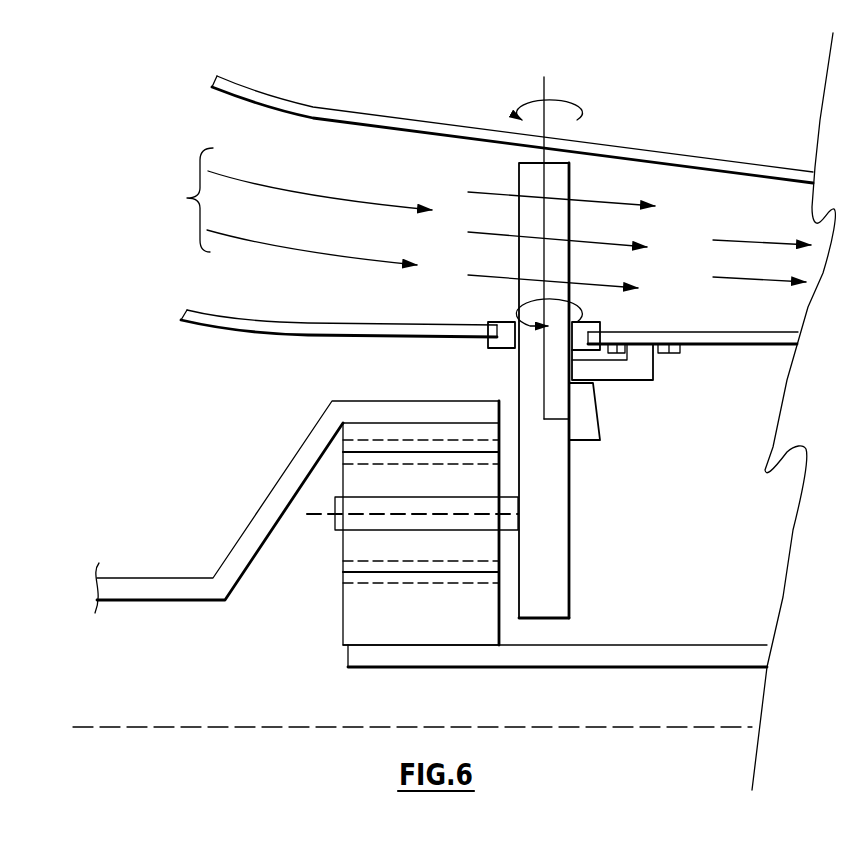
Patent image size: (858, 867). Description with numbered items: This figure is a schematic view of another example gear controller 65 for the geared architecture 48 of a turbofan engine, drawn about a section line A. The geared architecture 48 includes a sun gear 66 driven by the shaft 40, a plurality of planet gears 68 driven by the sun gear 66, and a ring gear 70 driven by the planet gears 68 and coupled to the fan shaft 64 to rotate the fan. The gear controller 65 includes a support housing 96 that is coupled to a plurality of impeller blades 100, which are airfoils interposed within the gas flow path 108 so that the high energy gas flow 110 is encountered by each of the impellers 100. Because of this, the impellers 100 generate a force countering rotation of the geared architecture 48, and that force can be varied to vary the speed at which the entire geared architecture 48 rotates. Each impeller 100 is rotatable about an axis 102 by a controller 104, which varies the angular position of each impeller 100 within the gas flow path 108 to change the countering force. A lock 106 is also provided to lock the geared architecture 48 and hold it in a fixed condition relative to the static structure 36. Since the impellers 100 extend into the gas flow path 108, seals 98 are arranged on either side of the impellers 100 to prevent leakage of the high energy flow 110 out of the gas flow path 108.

The static structure 36 is at (368, 331).
The shaft 40 is at (623, 655).
The geared architecture 48 is at (313, 622).
The fan shaft 64 is at (257, 512).
The gear controller 65 is at (665, 500).
The sun gear 66 is at (357, 608).
The planet gears 68 is at (357, 547).
The ring gear 70 is at (342, 430).
The support housing 96 is at (565, 480).
The seals 98 is at (487, 325).
The impeller blades 100 is at (562, 183).
The axis 102 is at (545, 83).
The controller 104 is at (587, 428).
The lock 106 is at (647, 368).
The gas flow path 108 is at (368, 174).
The high energy gas flow 110 is at (183, 197).
The section line A is at (136, 727).